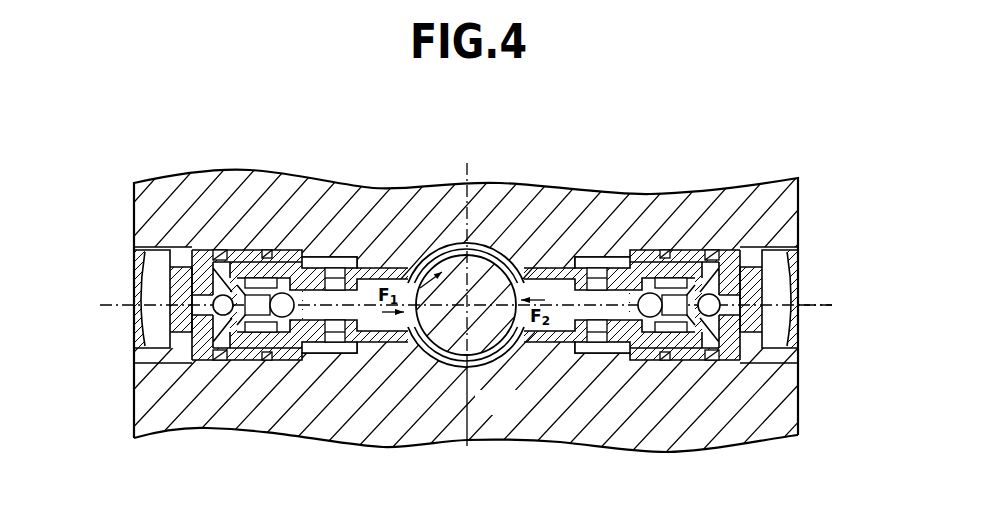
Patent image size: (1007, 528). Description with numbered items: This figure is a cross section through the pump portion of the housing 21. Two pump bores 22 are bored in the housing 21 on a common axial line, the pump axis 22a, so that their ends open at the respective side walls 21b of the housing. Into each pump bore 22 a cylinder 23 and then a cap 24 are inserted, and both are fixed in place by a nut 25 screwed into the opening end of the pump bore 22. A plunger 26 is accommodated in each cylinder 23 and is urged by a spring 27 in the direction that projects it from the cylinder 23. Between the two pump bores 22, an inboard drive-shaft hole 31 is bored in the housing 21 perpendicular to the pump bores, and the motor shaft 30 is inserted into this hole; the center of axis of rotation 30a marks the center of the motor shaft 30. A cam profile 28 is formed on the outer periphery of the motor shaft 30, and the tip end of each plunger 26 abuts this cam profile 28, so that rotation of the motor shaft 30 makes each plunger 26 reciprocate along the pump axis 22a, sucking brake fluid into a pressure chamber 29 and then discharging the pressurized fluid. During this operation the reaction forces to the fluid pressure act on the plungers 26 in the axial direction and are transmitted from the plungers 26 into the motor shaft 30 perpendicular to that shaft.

The housing 21 is at (800, 191).
The side wall 21b is at (135, 400).
The pump bore 22 is at (283, 250).
The pump axis 22a is at (817, 295).
The cylinder 23 is at (277, 353).
The cap 24 is at (202, 352).
The nut 25 is at (143, 245).
The plunger 26 is at (377, 322).
The spring 27 is at (250, 330).
The cam profile 28 is at (477, 243).
The pressure chamber 29 is at (260, 258).
The motor shaft 30 is at (511, 242).
The center of axis of rotation 30a is at (469, 308).
The inboard drive-shaft hole 31 is at (437, 238).